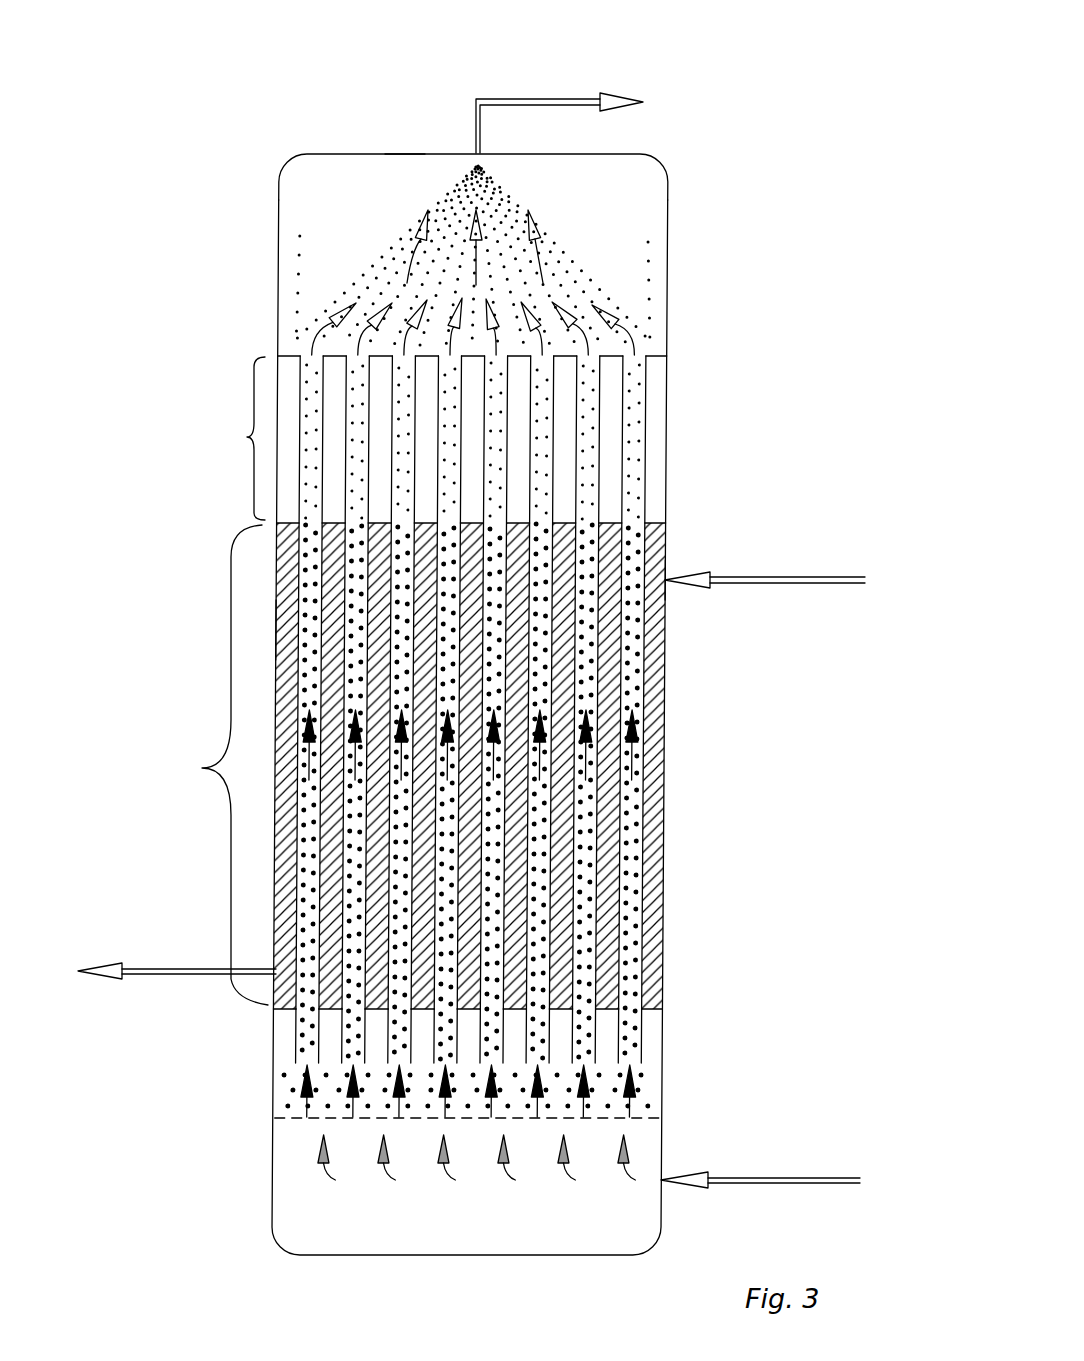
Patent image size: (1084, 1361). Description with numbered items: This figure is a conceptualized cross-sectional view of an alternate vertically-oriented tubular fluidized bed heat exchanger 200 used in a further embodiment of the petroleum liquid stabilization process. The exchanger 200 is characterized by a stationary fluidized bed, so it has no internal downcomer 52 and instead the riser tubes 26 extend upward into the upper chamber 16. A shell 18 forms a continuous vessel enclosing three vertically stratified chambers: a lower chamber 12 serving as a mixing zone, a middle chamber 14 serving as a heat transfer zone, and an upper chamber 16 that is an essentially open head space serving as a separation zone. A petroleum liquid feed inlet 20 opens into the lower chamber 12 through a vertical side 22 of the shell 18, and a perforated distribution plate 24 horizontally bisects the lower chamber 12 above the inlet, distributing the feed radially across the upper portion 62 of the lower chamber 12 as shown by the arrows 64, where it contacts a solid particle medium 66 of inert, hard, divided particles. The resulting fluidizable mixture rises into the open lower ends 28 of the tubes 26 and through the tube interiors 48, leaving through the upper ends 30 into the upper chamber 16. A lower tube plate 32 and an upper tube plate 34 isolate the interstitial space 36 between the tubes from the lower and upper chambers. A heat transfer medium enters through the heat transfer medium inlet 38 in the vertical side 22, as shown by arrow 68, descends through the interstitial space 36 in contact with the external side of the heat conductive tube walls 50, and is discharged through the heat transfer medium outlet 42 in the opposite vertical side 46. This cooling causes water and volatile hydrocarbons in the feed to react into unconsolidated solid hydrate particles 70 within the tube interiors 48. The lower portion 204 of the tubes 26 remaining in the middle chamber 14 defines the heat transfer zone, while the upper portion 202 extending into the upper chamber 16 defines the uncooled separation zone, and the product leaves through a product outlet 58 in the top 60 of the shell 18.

The fluidized bed heat exchanger 200 is at (399, 668).
The lower chamber 12 is at (292, 1254).
The middle chamber 14 is at (278, 625).
The upper chamber 16 is at (302, 231).
The shell 18 is at (360, 153).
The petroleum liquid feed inlet 20 is at (662, 1180).
The vertical side 22 is at (662, 903).
The perforated distribution plate 24 is at (632, 1122).
The riser tubes 26 is at (632, 858).
The lower ends 28 is at (640, 1050).
The upper ends 30 is at (635, 372).
The lower tube plate 32 is at (650, 1017).
The upper tube plate 34 is at (660, 360).
The interstitial space 36 is at (653, 652).
The heat transfer medium inlet 38 is at (667, 585).
The heat transfer medium outlet 42 is at (262, 1004).
The opposite vertical side 46 is at (278, 577).
The tube interiors 48 is at (332, 352).
The tube walls 50 is at (330, 390).
The internal downcomer 52 is at (493, 777).
The product outlet 58 is at (473, 150).
The top 60 is at (405, 153).
The upper portion 62 is at (272, 1040).
The arrows 64 is at (324, 1166).
The solid particle medium 66 is at (305, 1090).
The arrow 68 is at (808, 583).
The solid hydrate particles 70 is at (645, 216).
The upper portion 202 is at (229, 438).
The lower portion 204 is at (207, 765).